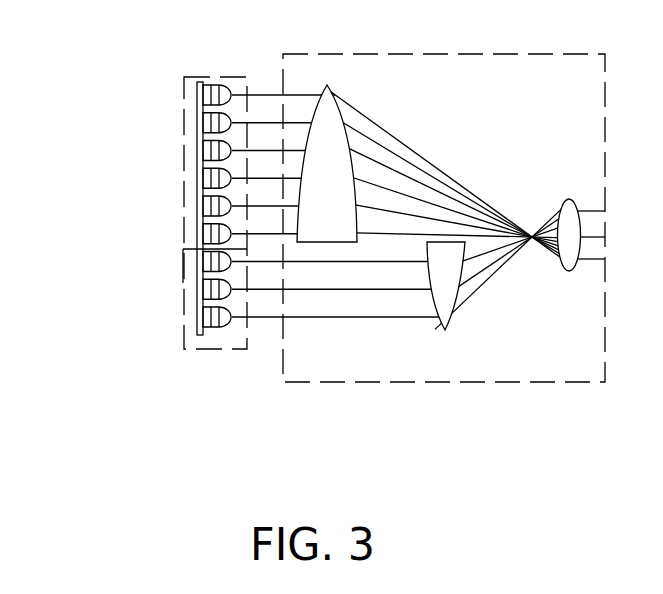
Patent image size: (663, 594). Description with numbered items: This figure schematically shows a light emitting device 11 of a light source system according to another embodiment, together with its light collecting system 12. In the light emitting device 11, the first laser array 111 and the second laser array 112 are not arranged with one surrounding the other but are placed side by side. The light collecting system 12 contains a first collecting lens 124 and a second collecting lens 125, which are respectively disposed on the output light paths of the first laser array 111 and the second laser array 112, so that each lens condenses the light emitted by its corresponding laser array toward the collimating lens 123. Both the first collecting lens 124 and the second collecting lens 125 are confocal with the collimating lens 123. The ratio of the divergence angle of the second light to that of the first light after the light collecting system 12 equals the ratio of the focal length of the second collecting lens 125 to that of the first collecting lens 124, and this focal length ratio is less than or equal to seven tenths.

The light emitting device 11 is at (139, 213).
The first laser array 111 is at (187, 160).
The second laser array 112 is at (169, 288).
The light collecting system 12 is at (418, 382).
The collimating lens 123 is at (567, 262).
The first collecting lens 124 is at (335, 98).
The second collecting lens 125 is at (452, 324).